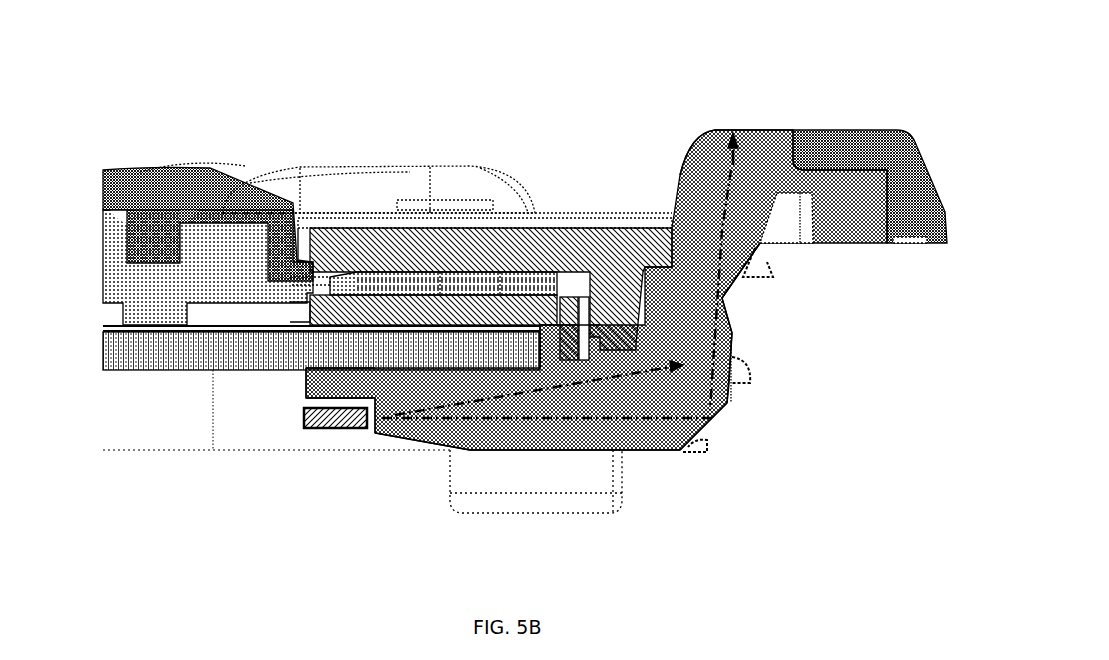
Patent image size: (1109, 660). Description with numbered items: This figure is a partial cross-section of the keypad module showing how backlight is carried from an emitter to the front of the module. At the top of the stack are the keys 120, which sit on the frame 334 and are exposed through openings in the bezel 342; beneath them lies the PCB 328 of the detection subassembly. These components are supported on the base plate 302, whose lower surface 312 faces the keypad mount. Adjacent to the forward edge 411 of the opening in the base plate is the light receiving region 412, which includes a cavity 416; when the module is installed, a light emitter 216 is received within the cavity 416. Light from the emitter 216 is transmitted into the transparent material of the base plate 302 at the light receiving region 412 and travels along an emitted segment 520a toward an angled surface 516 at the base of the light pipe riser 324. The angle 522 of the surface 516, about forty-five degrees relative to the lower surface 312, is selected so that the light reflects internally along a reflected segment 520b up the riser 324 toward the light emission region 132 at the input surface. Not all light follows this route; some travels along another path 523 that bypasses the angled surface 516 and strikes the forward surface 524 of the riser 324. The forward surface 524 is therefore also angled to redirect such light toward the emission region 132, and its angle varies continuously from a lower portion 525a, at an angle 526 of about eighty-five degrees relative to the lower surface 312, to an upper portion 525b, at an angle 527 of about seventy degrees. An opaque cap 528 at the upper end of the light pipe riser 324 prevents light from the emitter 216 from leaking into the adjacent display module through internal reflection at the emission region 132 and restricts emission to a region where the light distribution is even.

The keys 120 is at (415, 172).
The light emission region 132 is at (757, 130).
The light emitter 216 is at (338, 428).
The base plate 302 is at (655, 450).
The lower surface 312 is at (533, 450).
The light pipe riser 324 is at (703, 163).
The PCB 328 is at (150, 357).
The frame 334 is at (560, 323).
The bezel 342 is at (597, 257).
The forward edge of the opening 411 is at (335, 380).
The light receiving region 412 is at (315, 398).
The cavity 416 is at (310, 399).
The angled surface 516 is at (725, 413).
The emitted segment 520a is at (587, 420).
The reflected segment 520b is at (750, 333).
The angle 522 is at (706, 443).
The path 523 is at (477, 400).
The forward surface 524 is at (747, 350).
The lower portion 525a is at (723, 388).
The upper portion 525b is at (742, 283).
The angle 526 is at (753, 380).
The angle 527 is at (770, 263).
The opaque cap 528 is at (842, 143).